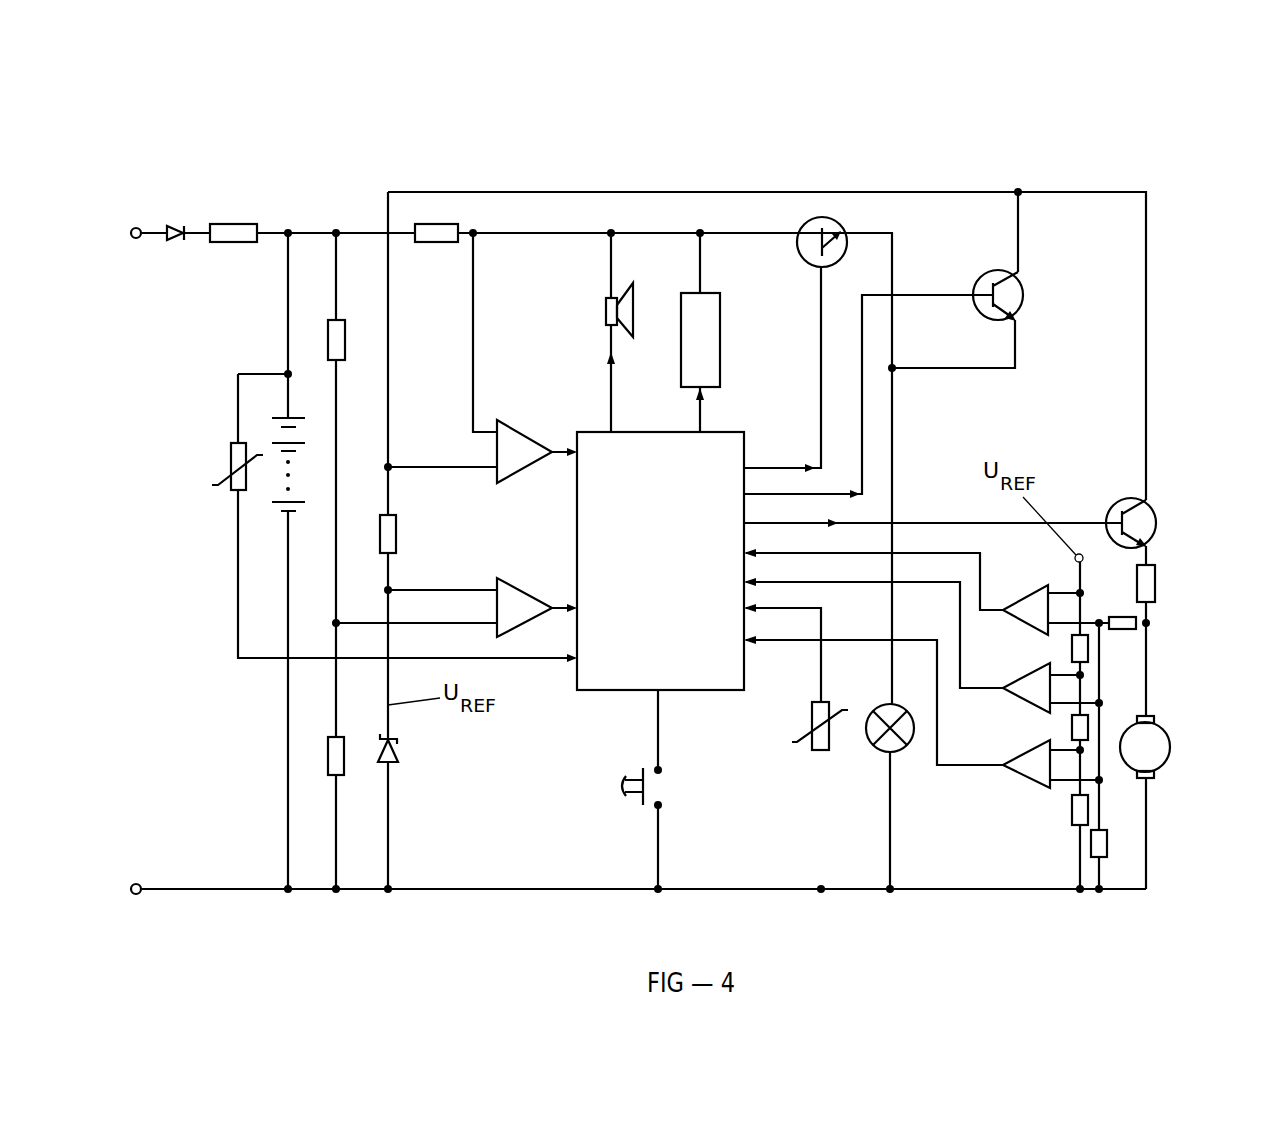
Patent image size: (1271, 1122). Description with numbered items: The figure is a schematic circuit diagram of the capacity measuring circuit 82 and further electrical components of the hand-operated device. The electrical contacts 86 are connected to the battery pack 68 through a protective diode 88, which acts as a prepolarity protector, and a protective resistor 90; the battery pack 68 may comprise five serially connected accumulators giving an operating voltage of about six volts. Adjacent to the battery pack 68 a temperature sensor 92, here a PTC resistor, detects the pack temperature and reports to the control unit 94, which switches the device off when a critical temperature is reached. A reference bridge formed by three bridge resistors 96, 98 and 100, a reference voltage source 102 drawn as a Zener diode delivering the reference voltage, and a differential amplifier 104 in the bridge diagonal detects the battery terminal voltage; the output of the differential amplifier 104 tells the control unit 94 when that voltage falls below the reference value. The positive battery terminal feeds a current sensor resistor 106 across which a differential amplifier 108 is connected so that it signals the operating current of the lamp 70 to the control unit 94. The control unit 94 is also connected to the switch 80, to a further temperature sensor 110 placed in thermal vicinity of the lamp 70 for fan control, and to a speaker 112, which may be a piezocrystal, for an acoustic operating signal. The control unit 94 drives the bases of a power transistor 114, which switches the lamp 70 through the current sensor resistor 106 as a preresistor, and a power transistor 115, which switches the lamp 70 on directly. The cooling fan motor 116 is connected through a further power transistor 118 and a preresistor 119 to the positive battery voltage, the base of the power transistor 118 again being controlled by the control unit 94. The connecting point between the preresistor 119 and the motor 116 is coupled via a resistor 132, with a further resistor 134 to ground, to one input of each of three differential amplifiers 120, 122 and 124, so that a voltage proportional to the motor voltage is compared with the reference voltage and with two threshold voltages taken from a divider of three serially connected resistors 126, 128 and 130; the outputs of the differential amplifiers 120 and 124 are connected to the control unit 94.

The battery pack 68 is at (287, 483).
The lamp 70 is at (878, 752).
The switch 80 is at (640, 798).
The control circuit 82 is at (1175, 897).
The electrical contacts 86 is at (134, 240).
The protective diode 88 is at (170, 229).
The protective resistor 90 is at (228, 224).
The temperature sensor 92 is at (235, 457).
The control unit 94 is at (678, 561).
The bridge resistor 96 is at (328, 332).
The bridge resistor 98 is at (397, 537).
The bridge resistor 100 is at (328, 757).
The reference voltage source 102 is at (395, 752).
The differential amplifier 104 is at (518, 590).
The current sensor resistor 106 is at (432, 224).
The differential amplifier 108 is at (518, 472).
The temperature sensor 110 is at (812, 752).
The speaker 112 is at (607, 315).
The power transistor 114 is at (810, 222).
The power transistor 115 is at (1022, 290).
The motor 116 is at (1170, 748).
The power transistor 118 is at (1150, 510).
The preresistor 119 is at (1156, 582).
The differential amplifier 120 is at (1032, 590).
The differential amplifier 122 is at (1027, 672).
The differential amplifier 124 is at (1027, 748).
The resistor 126 is at (1085, 652).
The resistor 128 is at (1085, 722).
The resistor 130 is at (1088, 810).
The resistor 132 is at (1135, 630).
The resistor 134 is at (1108, 845).